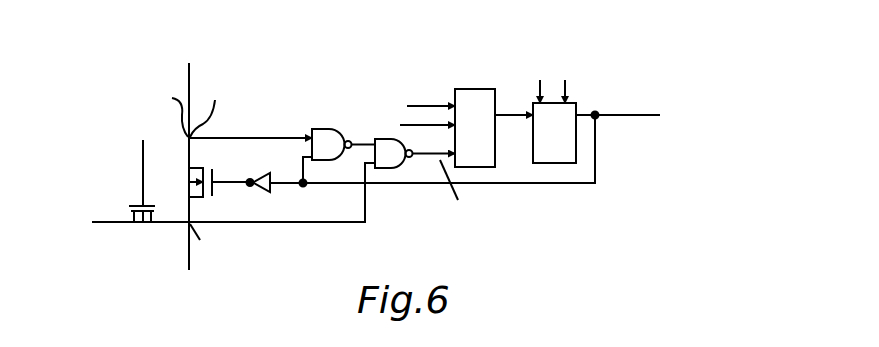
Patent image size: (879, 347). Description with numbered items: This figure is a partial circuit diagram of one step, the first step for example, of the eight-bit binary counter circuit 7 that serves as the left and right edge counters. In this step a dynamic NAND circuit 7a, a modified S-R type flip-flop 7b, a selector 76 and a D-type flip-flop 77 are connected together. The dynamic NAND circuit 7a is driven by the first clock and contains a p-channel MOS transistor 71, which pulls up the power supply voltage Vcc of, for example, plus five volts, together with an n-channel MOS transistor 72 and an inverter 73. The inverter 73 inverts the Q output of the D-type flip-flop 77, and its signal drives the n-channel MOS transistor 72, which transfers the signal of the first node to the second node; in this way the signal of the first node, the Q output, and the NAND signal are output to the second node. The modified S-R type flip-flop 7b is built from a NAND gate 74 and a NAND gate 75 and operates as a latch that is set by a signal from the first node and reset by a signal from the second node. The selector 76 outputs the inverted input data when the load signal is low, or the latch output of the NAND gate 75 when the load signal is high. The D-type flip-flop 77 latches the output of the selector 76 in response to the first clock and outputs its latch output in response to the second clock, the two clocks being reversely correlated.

The binary counter circuit 7 is at (68, 64).
The p-channel MOS transistor 71 is at (130, 204).
The n-channel MOS transistor 72 is at (203, 168).
The inverter 73 is at (270, 163).
The NAND gate 74 is at (322, 128).
The NAND gate 75 is at (402, 168).
The selector 76 is at (489, 58).
The D-type flip-flop 77 is at (577, 103).
The dynamic NAND circuit 7a is at (260, 234).
The modified S-R type flip-flop 7b is at (381, 194).